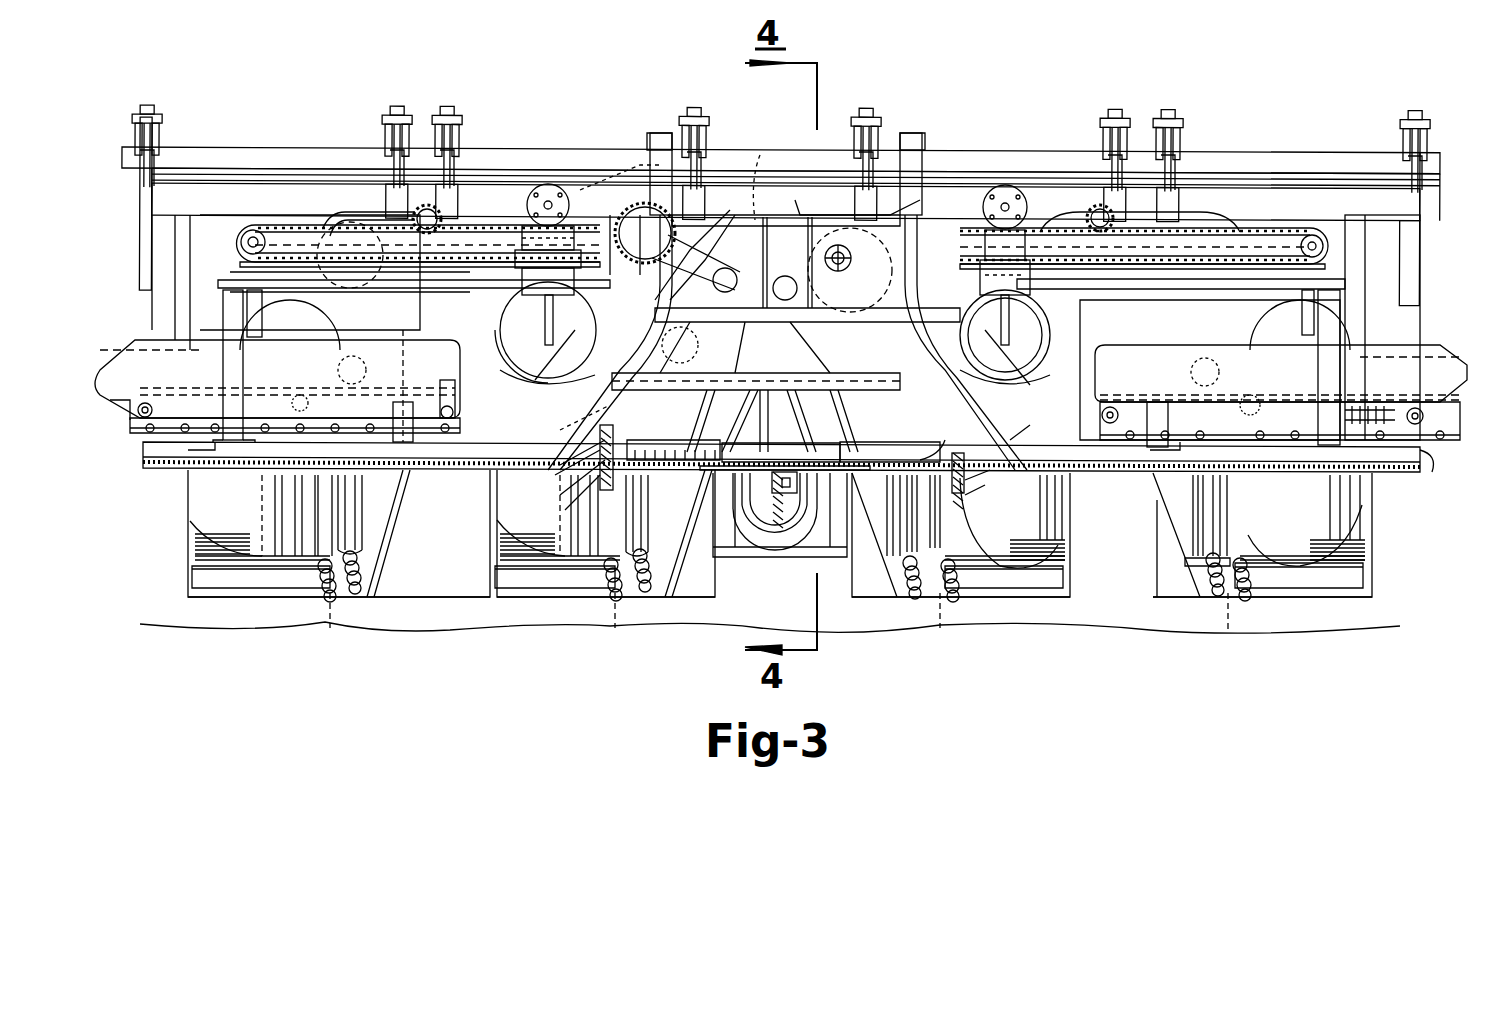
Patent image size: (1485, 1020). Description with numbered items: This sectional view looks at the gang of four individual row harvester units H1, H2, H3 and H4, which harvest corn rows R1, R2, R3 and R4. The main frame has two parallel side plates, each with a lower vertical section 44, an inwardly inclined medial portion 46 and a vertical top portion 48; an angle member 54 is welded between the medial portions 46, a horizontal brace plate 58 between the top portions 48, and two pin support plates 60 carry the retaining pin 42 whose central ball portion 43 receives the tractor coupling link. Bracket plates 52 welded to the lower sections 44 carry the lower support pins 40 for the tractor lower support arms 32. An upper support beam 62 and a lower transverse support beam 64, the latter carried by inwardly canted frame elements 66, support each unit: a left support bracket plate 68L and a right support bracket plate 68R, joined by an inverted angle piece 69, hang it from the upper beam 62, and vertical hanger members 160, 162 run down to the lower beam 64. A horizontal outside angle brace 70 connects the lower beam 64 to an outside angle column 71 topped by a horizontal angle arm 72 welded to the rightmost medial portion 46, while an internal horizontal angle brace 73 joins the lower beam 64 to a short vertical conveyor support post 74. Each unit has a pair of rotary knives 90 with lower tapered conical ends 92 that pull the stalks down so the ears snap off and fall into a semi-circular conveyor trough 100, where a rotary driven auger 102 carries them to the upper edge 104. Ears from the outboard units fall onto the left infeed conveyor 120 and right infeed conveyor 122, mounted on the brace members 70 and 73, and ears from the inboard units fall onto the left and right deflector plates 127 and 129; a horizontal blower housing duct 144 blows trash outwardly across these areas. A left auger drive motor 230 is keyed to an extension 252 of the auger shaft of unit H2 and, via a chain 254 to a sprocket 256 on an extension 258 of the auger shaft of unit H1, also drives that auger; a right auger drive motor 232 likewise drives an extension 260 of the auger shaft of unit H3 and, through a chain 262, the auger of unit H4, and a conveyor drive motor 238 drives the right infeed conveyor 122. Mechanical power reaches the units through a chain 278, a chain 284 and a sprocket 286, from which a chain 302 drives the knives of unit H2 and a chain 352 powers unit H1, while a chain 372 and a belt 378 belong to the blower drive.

The inverted angle piece 69 is at (250, 200).
The left support bracket plate 68L is at (143, 190).
The right support bracket plate 68R is at (392, 190).
The vertical top portions 48 is at (660, 190).
The chain 302 is at (325, 330).
The chain 254 is at (280, 240).
The sprocket 256 is at (241, 247).
The extension of the auger shaft 258 is at (240, 300).
The chain 262 is at (1280, 260).
The left auger drive motor 230 is at (520, 170).
The upper support beam 62 is at (565, 160).
The chain 352 is at (605, 210).
The extension of the auger shaft 252 is at (548, 300).
The right auger drive motor 232 is at (1005, 185).
The extension of the auger shaft 260 is at (1012, 310).
The rotary driven auger 102 is at (300, 298).
The horizontal blower housing duct 144 is at (1035, 322).
The upper edge of the conveyor trough 104 is at (530, 385).
The sprocket 286 is at (630, 255).
The horizontal brace plate 58 is at (760, 240).
The pin support plates 60 is at (800, 250).
The central ball portion 43 is at (785, 276).
The retaining pin 42 is at (838, 265).
The belt 378 is at (780, 210).
The chain 284 is at (735, 210).
The inwardly inclined medial portions 46 is at (675, 335).
The angle member 54 is at (905, 378).
The chain 372 is at (710, 390).
The chain 278 is at (810, 395).
The inwardly canted frame elements 66 is at (672, 445).
The lower vertical section 44 is at (600, 432).
The left deflector plate 127 is at (560, 425).
The bracket plates 52 is at (560, 470).
The lower support pins 40 is at (763, 484).
The lower support arms 32 is at (600, 480).
The right deflector plate 129 is at (1000, 425).
The horizontal angle arm 72 is at (488, 290).
The vertical hanger member 160 is at (152, 311).
The vertical hanger member 162 is at (1395, 268).
The vertical conveyor support post 74 is at (395, 412).
The left infeed conveyor 120 is at (190, 378).
The right infeed conveyor 122 is at (1435, 382).
The outside angle column 71 is at (270, 410).
The lower transverse support beam 64 is at (143, 452).
The conveyor drive motor 238 is at (1442, 467).
The horizontal outside angle brace 70 is at (190, 460).
The internal horizontal angle brace 73 is at (405, 470).
The semi-circular conveyor trough 100 is at (243, 496).
The rotary knives 90 is at (300, 522).
The lower tapered conical ends 92 is at (310, 578).
The row R1 is at (346, 628).
The row R2 is at (638, 630).
The row R3 is at (953, 630).
The row R4 is at (1246, 632).
The individual row harvester unit H1 is at (246, 610).
The individual row harvester unit H2 is at (601, 613).
The individual row harvester unit H3 is at (913, 613).
The individual row harvester unit H4 is at (1208, 619).